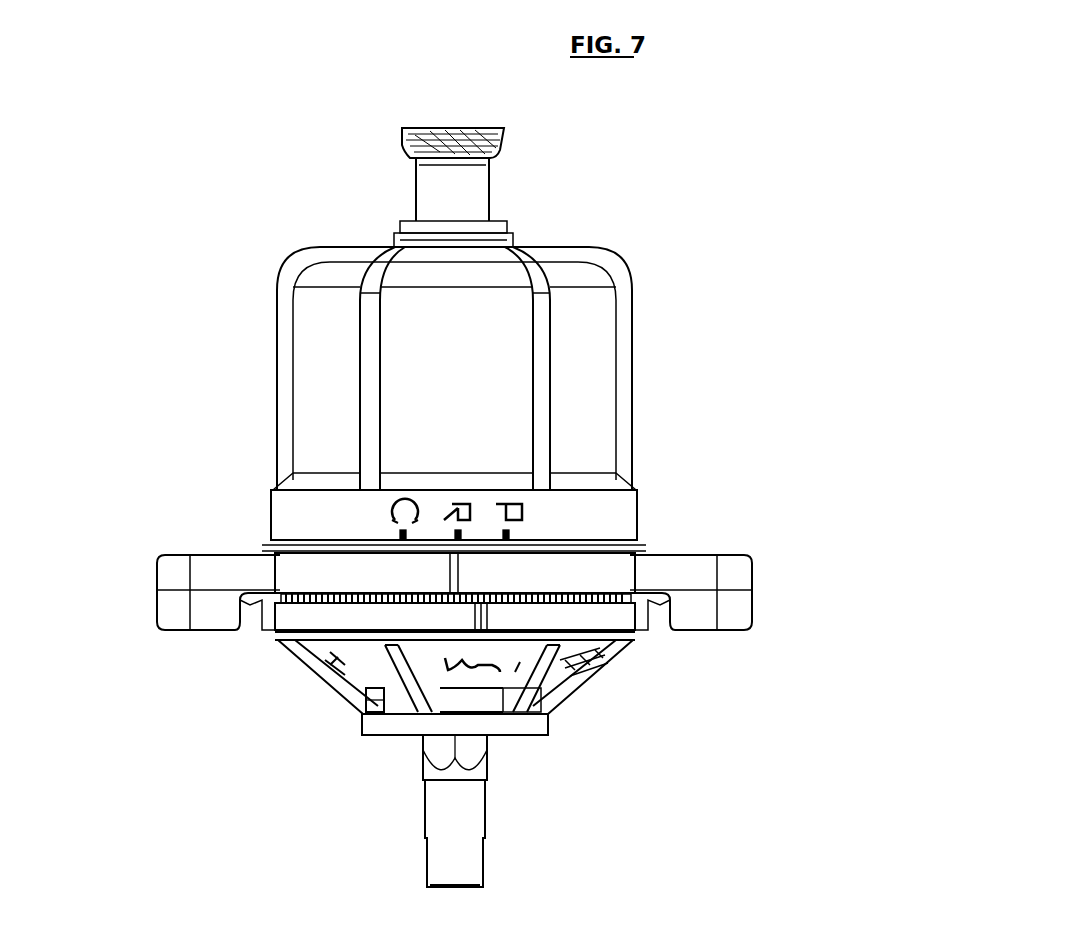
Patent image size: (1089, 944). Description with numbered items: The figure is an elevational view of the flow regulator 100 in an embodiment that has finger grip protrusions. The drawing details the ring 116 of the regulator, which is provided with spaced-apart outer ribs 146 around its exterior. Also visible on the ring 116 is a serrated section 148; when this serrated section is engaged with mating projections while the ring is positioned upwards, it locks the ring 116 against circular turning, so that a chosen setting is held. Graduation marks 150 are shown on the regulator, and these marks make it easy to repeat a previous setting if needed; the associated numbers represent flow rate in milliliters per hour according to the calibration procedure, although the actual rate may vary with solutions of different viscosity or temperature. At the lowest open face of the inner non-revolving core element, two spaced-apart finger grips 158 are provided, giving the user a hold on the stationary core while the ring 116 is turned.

The flow regulator 100 is at (580, 300).
The finger grips 158 is at (730, 581).
The serrated section 148 is at (343, 597).
The outer ribs 146 is at (330, 688).
The ring 116 is at (590, 680).
The graduation marks 150 is at (495, 672).